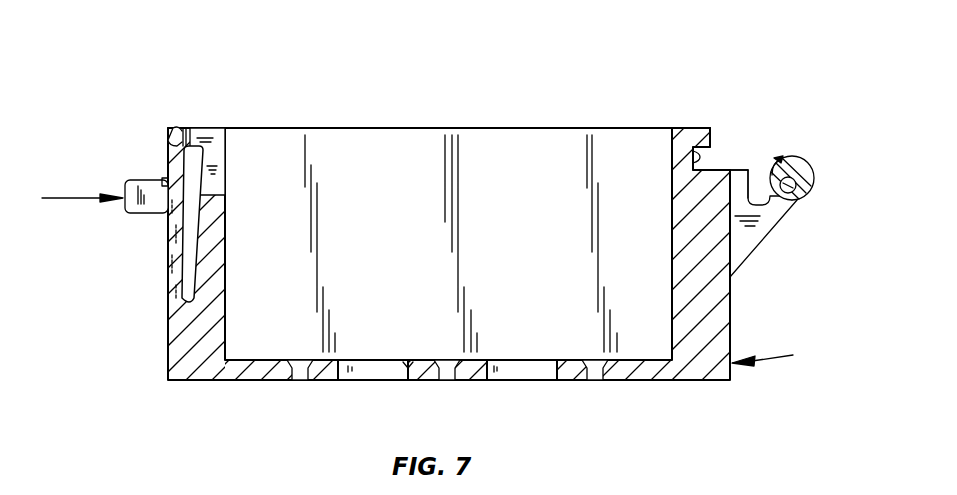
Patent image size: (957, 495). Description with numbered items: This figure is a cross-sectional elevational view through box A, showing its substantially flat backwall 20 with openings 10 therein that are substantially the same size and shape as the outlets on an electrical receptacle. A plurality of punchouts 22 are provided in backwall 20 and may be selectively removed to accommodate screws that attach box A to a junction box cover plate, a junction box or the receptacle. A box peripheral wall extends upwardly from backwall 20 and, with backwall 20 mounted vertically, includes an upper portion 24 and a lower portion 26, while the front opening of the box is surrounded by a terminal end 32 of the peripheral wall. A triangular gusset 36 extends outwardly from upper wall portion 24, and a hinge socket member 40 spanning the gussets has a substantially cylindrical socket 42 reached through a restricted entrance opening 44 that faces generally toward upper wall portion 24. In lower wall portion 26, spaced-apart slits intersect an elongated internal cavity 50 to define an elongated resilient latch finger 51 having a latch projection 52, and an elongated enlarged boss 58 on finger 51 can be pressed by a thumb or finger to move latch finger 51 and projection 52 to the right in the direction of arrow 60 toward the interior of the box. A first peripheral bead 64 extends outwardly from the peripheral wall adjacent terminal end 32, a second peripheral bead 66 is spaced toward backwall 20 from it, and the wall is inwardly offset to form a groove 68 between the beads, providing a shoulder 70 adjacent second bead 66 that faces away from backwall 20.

The openings 10 is at (407, 362).
The backwall 20 is at (622, 382).
The punchouts 22 is at (298, 362).
The upper portion 24 is at (732, 307).
The lower portion 26 is at (168, 327).
The terminal end 32 is at (690, 128).
The triangular gusset 36 is at (762, 240).
The hinge socket member 40 is at (812, 168).
The socket 42 is at (808, 193).
The entrance opening 44 is at (772, 175).
The internal cavity 50 is at (198, 228).
The latch finger 51 is at (170, 232).
The latch projection 52 is at (167, 141).
The boss 58 is at (127, 213).
The arrow 60 is at (86, 197).
The first peripheral bead 64 is at (706, 128).
The second peripheral bead 66 is at (748, 170).
The groove 68 is at (682, 128).
The shoulder 70 is at (723, 168).
The box A is at (774, 350).